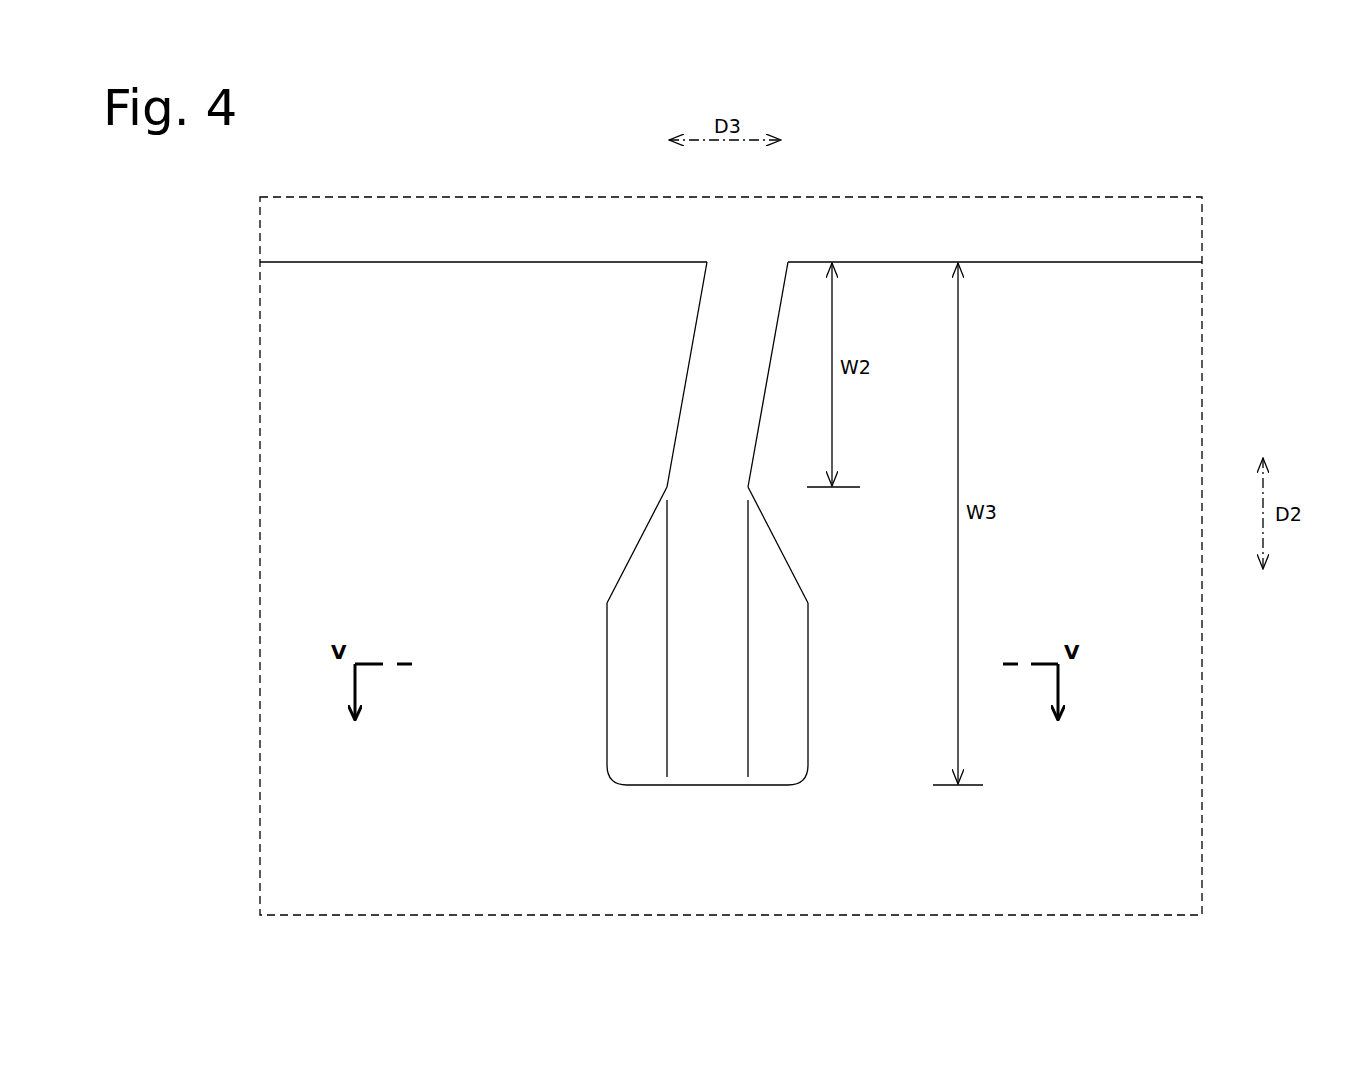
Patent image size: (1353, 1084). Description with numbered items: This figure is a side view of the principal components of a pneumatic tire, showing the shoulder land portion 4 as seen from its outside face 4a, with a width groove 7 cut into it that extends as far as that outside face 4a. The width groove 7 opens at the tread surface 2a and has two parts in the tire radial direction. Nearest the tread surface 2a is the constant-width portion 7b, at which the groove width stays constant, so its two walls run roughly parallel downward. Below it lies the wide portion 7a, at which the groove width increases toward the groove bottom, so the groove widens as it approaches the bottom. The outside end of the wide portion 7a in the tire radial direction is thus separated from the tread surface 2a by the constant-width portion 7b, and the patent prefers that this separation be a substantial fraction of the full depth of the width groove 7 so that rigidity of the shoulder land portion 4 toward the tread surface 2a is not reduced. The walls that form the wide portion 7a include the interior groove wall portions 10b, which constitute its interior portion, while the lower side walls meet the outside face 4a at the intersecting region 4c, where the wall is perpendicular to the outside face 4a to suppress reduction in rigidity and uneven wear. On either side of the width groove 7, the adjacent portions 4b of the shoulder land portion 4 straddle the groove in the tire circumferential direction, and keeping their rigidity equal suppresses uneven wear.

The shoulder land portion 4 is at (371, 243).
The outside face 4a is at (283, 417).
The adjacent portions 4b is at (760, 632).
The intersecting region 4c is at (609, 725).
The tread surface 2a is at (993, 262).
The width groove 7 is at (680, 356).
The wide portion 7a is at (813, 561).
The constant-width portion 7b is at (682, 388).
The interior groove wall portions 10b is at (635, 630).